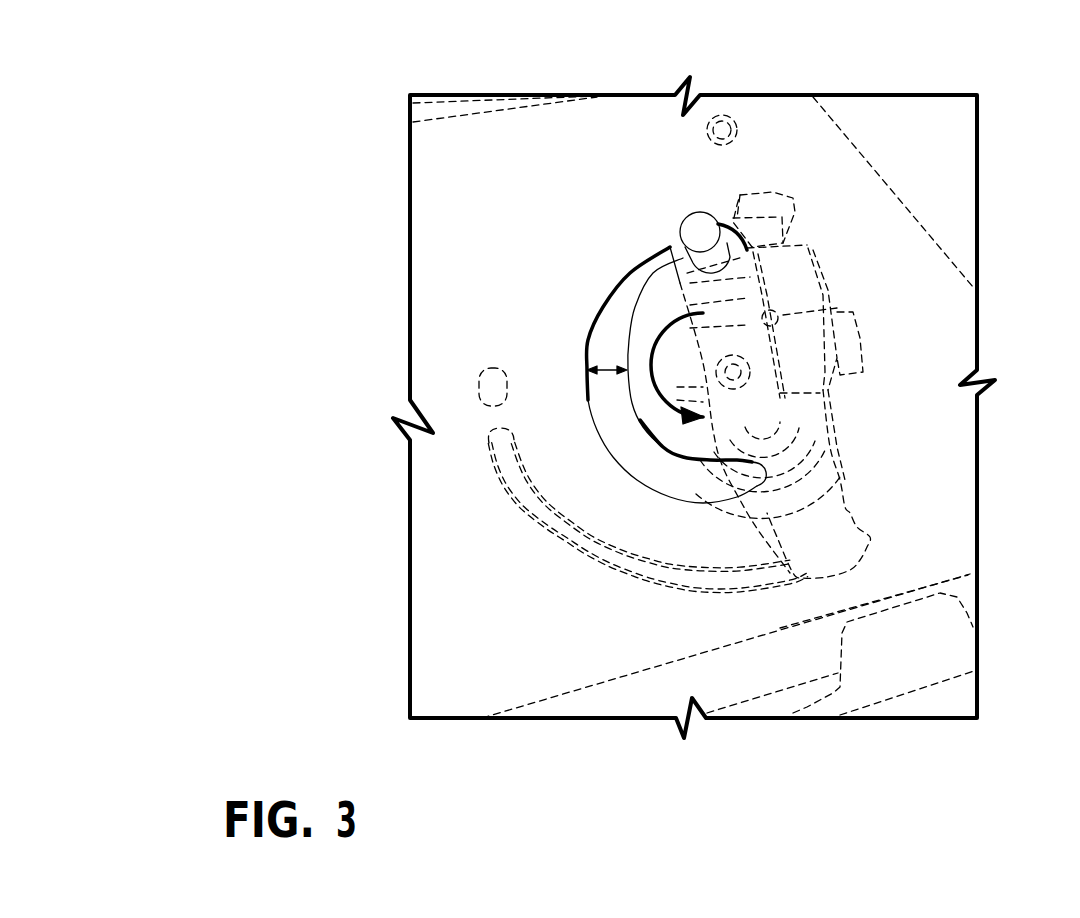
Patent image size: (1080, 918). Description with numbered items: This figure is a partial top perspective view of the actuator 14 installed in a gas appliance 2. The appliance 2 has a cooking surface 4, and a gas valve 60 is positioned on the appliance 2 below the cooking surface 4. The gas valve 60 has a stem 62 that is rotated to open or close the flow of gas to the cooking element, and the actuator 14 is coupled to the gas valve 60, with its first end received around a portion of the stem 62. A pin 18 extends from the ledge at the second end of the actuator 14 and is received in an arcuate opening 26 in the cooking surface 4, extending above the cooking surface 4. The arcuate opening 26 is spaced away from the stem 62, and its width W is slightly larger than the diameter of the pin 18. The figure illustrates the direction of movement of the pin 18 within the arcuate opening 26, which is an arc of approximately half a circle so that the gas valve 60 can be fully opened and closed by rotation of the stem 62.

The appliance 2 is at (785, 656).
The cooking surface 4 is at (603, 278).
The actuator 14 is at (757, 283).
The pin 18 is at (705, 232).
The arcuate opening 26 is at (617, 327).
The gas valve 60 is at (835, 510).
The stem 62 is at (712, 403).
The width of arcuate opening W is at (605, 377).